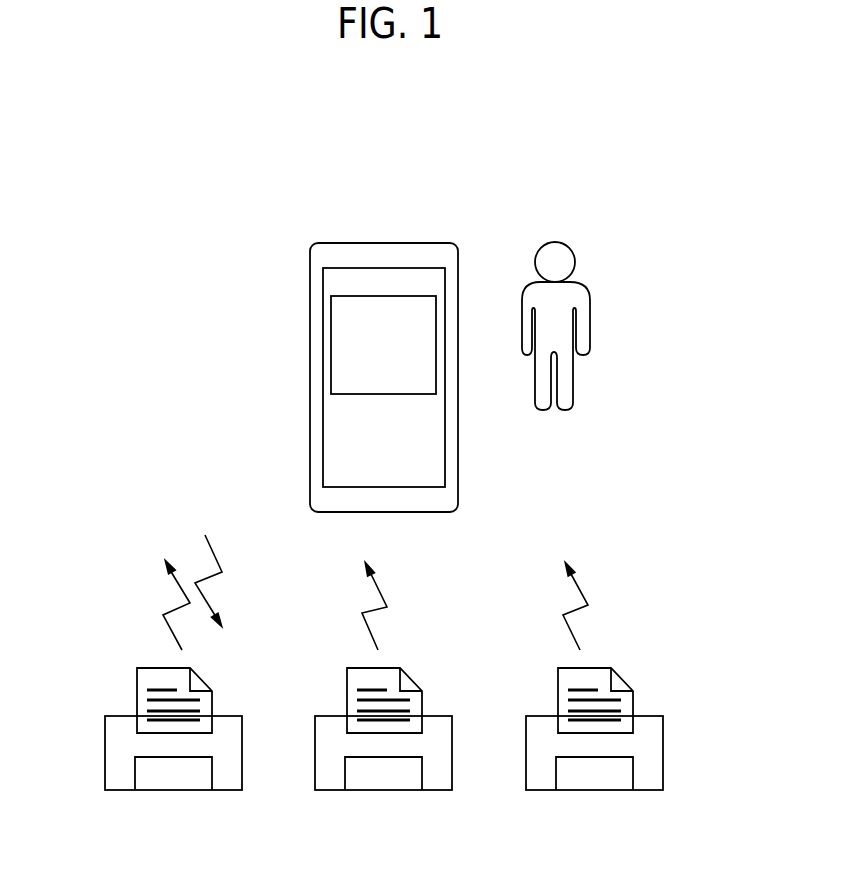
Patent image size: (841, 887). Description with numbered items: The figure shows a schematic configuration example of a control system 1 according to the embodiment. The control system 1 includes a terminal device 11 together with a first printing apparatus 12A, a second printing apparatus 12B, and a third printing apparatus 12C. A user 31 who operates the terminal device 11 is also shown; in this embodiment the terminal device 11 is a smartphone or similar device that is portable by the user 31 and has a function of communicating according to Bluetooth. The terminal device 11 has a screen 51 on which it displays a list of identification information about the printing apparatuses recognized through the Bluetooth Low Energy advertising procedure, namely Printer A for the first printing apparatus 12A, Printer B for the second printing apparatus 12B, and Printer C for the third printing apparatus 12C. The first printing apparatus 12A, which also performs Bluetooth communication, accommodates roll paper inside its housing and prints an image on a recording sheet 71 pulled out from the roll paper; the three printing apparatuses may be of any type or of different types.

The control system 1 is at (668, 207).
The terminal device 11 is at (410, 243).
The screen 51 is at (331, 338).
The user 31 is at (555, 242).
The first printing apparatus 12A is at (125, 716).
The second printing apparatus 12B is at (337, 716).
The third printing apparatus 12C is at (540, 716).
The recording sheet 71 is at (148, 676).